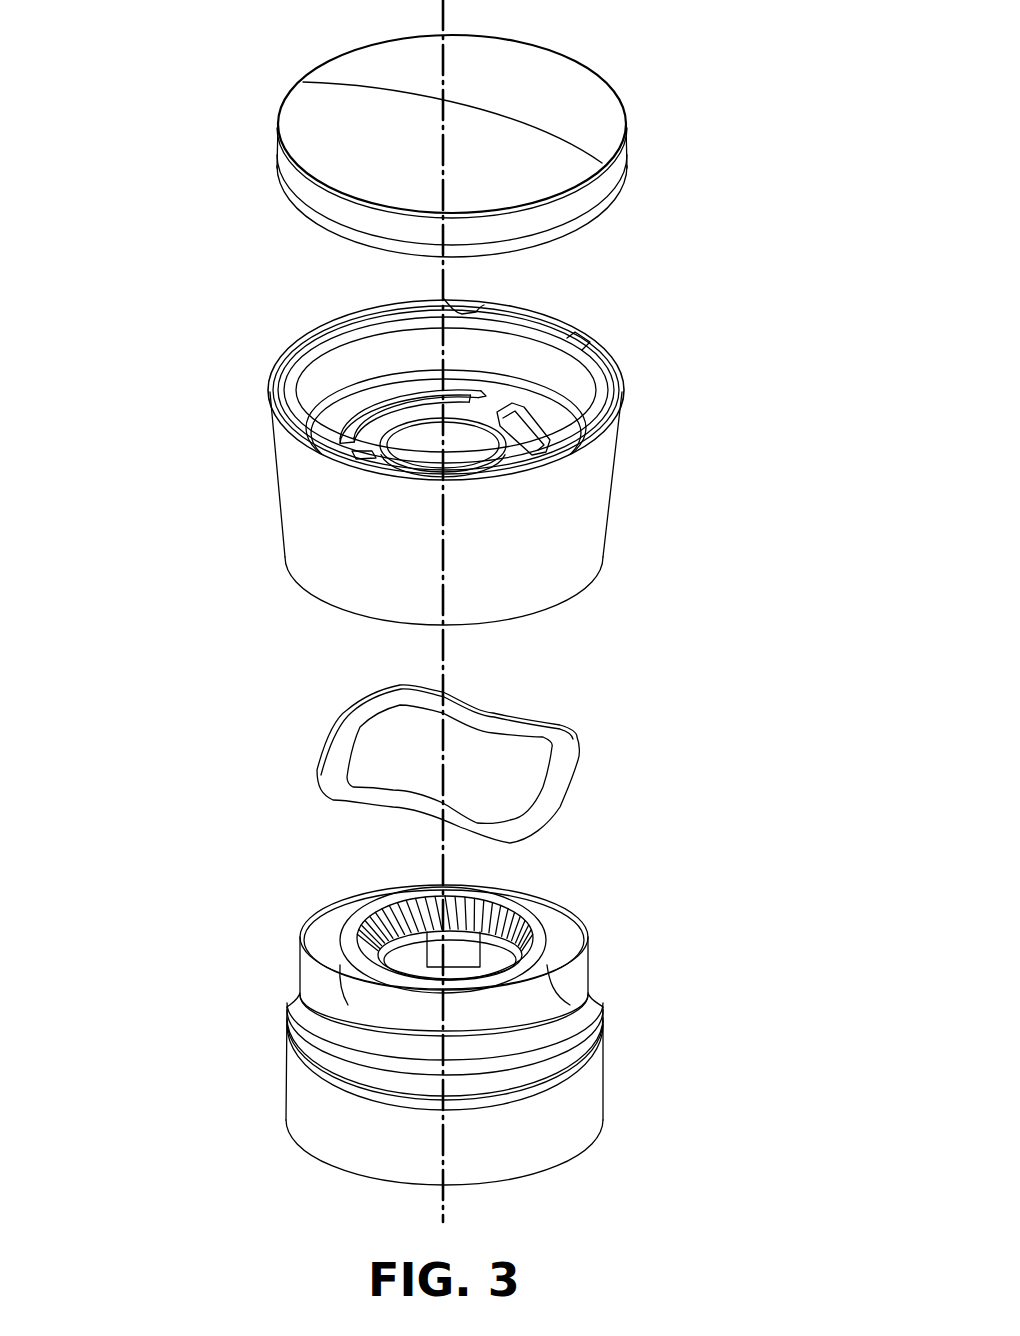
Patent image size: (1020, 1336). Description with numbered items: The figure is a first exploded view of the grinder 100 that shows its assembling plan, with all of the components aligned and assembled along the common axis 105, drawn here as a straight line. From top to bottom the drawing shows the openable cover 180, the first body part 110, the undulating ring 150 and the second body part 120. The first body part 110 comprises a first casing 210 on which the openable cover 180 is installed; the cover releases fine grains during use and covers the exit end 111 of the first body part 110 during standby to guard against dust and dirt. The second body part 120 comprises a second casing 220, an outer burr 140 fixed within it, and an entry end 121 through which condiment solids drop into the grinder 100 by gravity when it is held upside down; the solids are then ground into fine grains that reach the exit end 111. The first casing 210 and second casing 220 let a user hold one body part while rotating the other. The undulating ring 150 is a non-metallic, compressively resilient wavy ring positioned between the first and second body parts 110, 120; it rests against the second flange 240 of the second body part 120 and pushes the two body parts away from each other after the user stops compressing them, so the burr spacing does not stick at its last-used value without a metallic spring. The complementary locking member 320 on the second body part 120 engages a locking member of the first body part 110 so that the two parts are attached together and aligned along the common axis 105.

The grinder 100 is at (438, 622).
The common axis 105 is at (440, 3).
The first body part 110 is at (474, 460).
The exit end 111 is at (490, 345).
The second body part 120 is at (438, 1053).
The entry end 121 is at (492, 1198).
The outer burr 140 is at (531, 924).
The undulating ring 150 is at (342, 748).
The openable cover 180 is at (305, 137).
The first casing 210 is at (307, 488).
The second casing 220 is at (373, 1126).
The second flange 240 is at (332, 988).
The complementary locking member 320 is at (313, 1022).